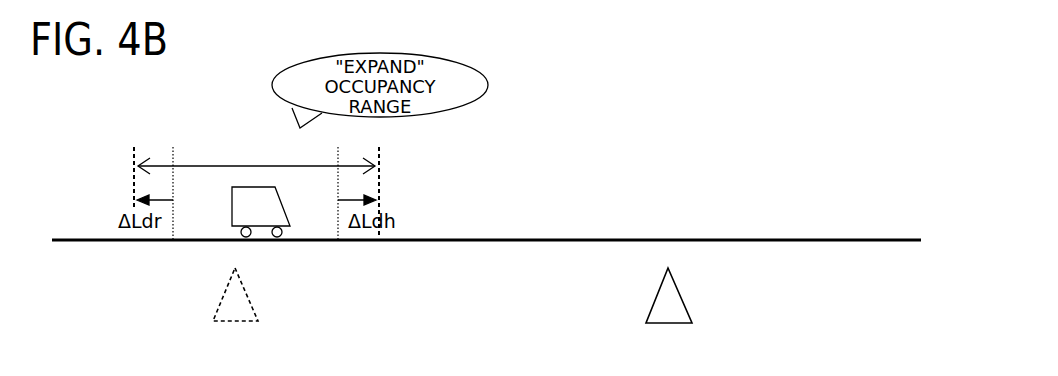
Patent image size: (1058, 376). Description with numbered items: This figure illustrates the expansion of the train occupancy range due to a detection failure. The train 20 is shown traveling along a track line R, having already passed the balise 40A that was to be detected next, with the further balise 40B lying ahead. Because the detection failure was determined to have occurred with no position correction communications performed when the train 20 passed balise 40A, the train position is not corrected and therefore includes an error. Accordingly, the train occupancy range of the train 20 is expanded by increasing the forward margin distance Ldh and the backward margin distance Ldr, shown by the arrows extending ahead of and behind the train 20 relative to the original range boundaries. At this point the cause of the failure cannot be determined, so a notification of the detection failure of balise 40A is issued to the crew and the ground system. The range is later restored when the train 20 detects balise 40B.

The train 20 is at (243, 190).
The balise 40A is at (233, 325).
The balise 40B is at (680, 298).
The road R is at (783, 238).